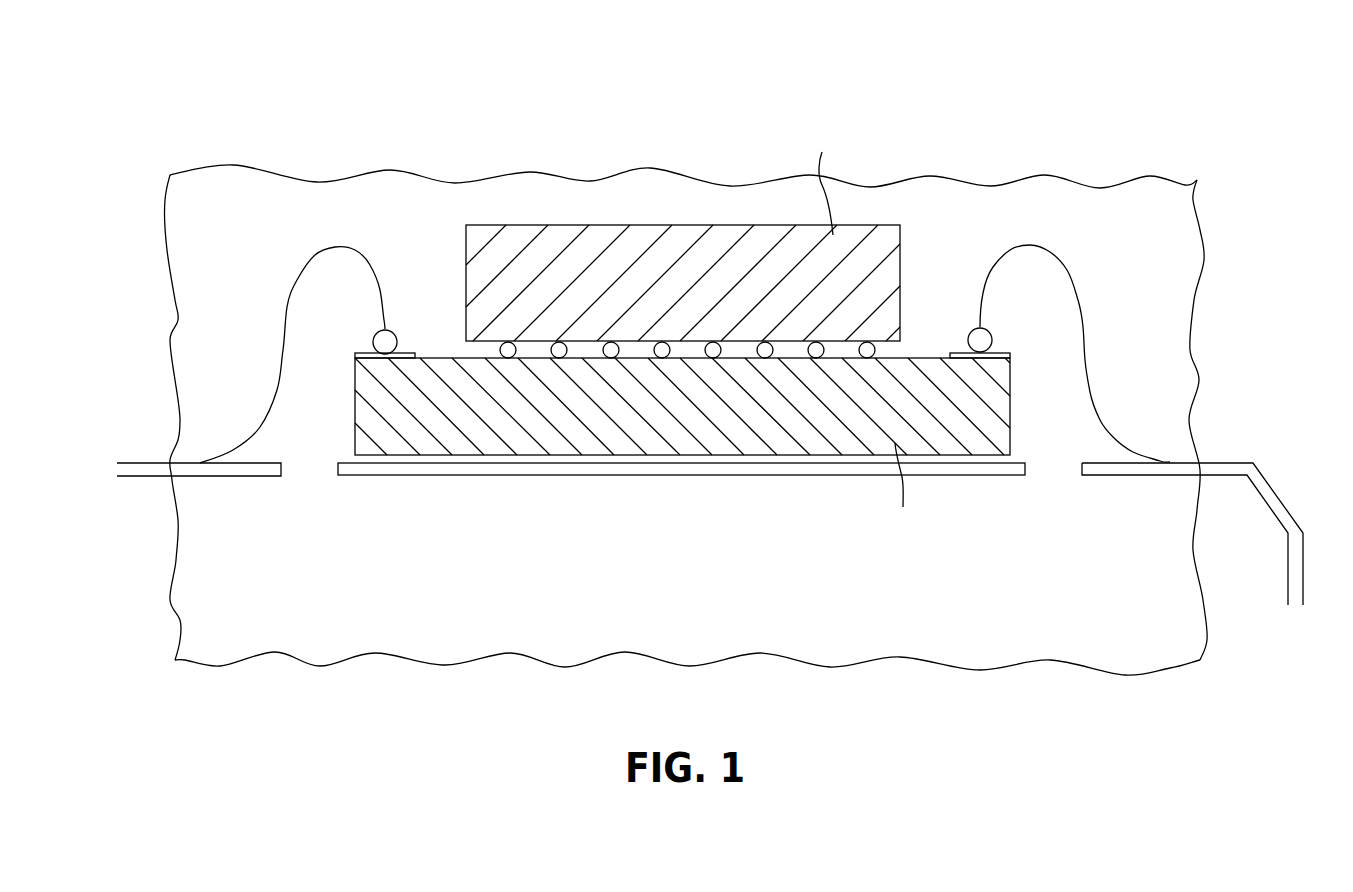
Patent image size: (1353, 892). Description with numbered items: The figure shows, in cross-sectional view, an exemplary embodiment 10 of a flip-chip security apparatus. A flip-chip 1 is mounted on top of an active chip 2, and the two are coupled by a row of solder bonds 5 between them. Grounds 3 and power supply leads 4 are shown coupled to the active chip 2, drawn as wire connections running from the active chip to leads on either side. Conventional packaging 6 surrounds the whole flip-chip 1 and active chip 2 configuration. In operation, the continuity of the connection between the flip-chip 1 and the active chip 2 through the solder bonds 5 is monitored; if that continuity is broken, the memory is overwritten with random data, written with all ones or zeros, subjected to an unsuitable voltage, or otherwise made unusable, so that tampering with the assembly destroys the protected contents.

The exemplary embodiment 10 is at (268, 108).
The flip-chip 1 is at (888, 268).
The active chip 2 is at (727, 443).
The grounds 3 is at (295, 278).
The power supply leads 4 is at (1058, 257).
The solder bonds 5 is at (878, 353).
The packaging 6 is at (997, 655).